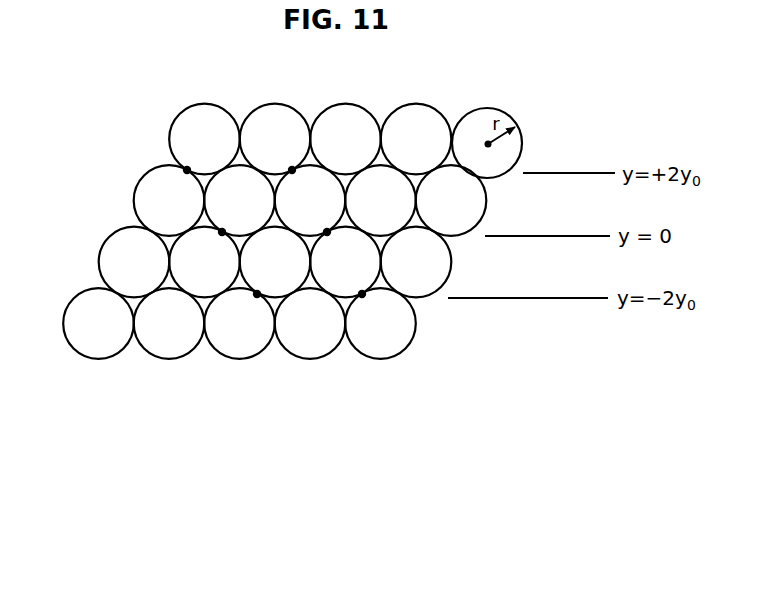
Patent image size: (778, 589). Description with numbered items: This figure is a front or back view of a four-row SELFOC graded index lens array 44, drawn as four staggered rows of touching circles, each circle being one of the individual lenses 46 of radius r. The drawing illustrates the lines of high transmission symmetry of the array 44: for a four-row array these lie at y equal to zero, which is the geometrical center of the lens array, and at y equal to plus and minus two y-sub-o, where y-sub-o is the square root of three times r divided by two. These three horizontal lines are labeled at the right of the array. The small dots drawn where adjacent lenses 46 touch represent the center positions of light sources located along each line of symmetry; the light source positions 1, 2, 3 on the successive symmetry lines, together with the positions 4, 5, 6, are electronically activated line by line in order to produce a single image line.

The graded index lens array 44 is at (148, 133).
The individual lenses 46 is at (370, 118).
The light source center position 1 is at (183, 184).
The light source center position 2 is at (217, 248).
The light source center position 3 is at (253, 307).
The light source center position 4 is at (296, 182).
The light source center position 5 is at (331, 246).
The light source center position 6 is at (366, 306).